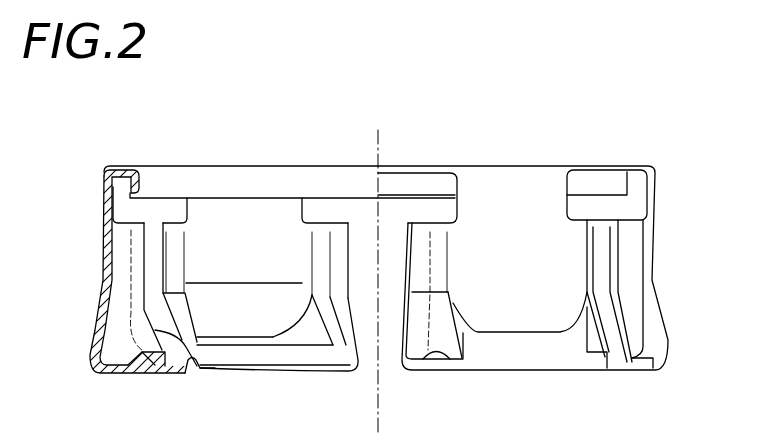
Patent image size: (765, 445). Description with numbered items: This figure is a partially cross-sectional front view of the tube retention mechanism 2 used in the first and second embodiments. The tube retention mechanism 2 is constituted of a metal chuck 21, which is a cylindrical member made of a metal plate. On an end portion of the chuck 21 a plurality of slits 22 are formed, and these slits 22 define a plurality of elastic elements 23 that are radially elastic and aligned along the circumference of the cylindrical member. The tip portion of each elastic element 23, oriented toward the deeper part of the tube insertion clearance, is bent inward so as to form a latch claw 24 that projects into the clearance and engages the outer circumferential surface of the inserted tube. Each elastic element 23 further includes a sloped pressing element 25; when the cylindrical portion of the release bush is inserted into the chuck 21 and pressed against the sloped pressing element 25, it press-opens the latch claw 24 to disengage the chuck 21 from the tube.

The tube retention mechanism 2 is at (640, 134).
The chuck 21 is at (593, 165).
The slits 22 is at (603, 248).
The elastic elements 23 is at (237, 258).
The latch claw 24 is at (286, 362).
The sloped pressing element 25 is at (186, 366).